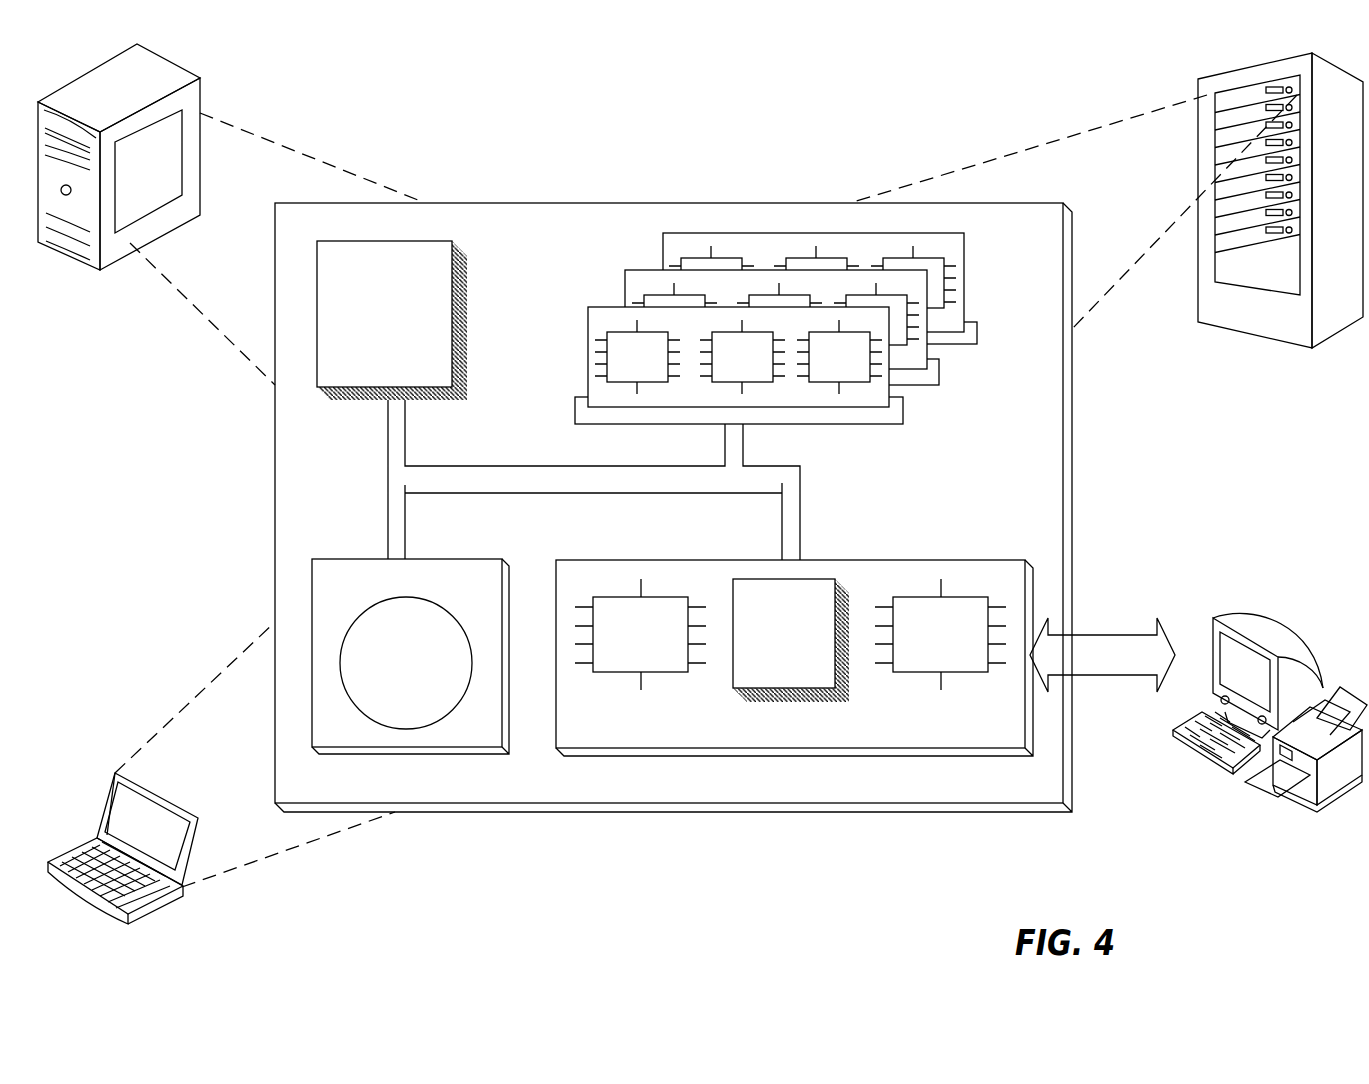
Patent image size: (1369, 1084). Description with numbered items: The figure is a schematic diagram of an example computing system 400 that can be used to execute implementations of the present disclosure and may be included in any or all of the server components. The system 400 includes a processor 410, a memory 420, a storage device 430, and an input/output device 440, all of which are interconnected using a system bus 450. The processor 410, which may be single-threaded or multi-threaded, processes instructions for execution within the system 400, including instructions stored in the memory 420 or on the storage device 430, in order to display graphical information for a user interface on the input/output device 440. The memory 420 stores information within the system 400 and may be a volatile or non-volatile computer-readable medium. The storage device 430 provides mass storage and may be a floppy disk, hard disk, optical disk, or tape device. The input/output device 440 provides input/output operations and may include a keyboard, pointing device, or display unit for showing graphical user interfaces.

The computing system 400 is at (481, 118).
The processor 410 is at (392, 320).
The memory 420 is at (970, 384).
The storage device 430 is at (410, 656).
The input/output device 440 is at (1212, 620).
The system bus 450 is at (594, 484).